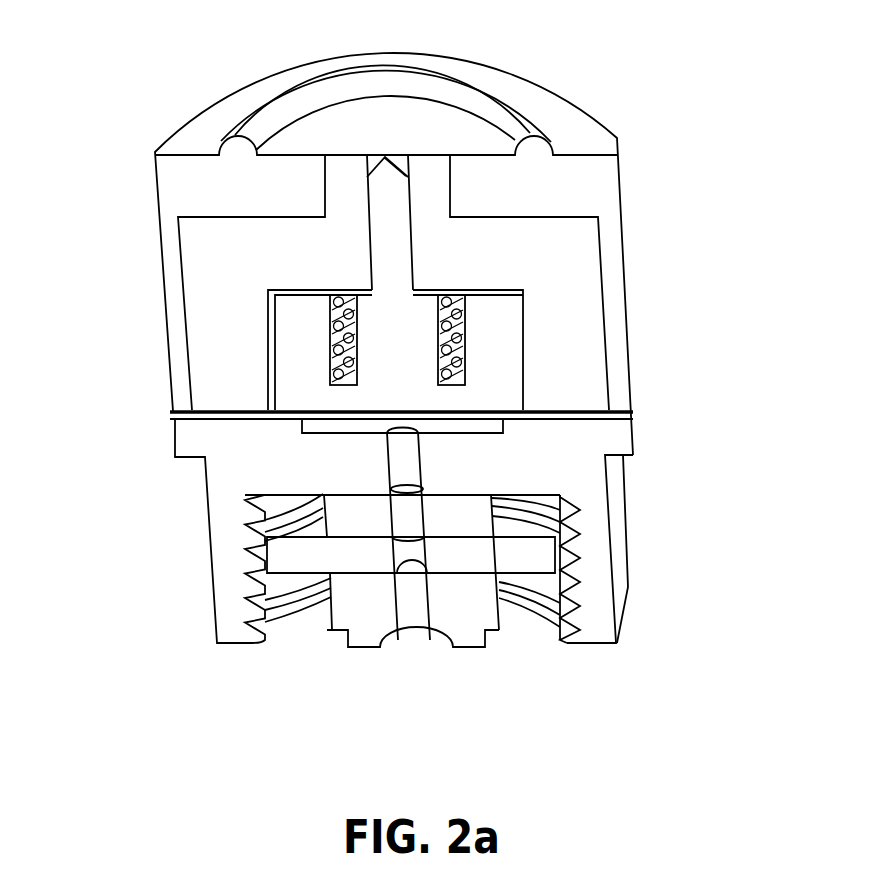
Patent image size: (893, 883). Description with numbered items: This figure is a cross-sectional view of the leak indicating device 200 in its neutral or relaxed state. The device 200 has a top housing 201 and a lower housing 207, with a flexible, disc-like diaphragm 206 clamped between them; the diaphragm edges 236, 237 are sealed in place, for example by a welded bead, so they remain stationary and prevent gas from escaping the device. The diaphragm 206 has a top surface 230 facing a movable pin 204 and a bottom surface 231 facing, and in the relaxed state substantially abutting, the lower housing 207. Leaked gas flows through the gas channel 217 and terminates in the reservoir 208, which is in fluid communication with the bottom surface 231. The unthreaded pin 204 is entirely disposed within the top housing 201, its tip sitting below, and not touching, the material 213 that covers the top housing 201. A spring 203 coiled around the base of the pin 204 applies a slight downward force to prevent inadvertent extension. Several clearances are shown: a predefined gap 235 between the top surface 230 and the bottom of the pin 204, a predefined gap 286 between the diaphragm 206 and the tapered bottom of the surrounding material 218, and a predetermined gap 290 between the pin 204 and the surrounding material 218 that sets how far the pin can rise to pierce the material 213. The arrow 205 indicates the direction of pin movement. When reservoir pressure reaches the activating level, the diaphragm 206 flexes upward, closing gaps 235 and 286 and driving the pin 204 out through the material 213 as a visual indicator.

The device 200 is at (150, 77).
The top housing 201 is at (598, 188).
The material 213 is at (477, 142).
The surrounding material 218 is at (598, 276).
The gap 290 is at (505, 290).
The spring 203 is at (455, 322).
The movable pin 204 is at (497, 350).
The actuation direction 205 is at (292, 392).
The gap 286 is at (262, 410).
The gap 235 is at (458, 413).
The top surface 230 is at (587, 411).
The edge 237 is at (610, 414).
The flexible diaphragm 206 is at (617, 421).
The edge 236 is at (183, 420).
The bottom surface 231 is at (229, 421).
The reservoir 208 is at (340, 432).
The lower housing 207 is at (585, 495).
The gas channel 217 is at (415, 610).